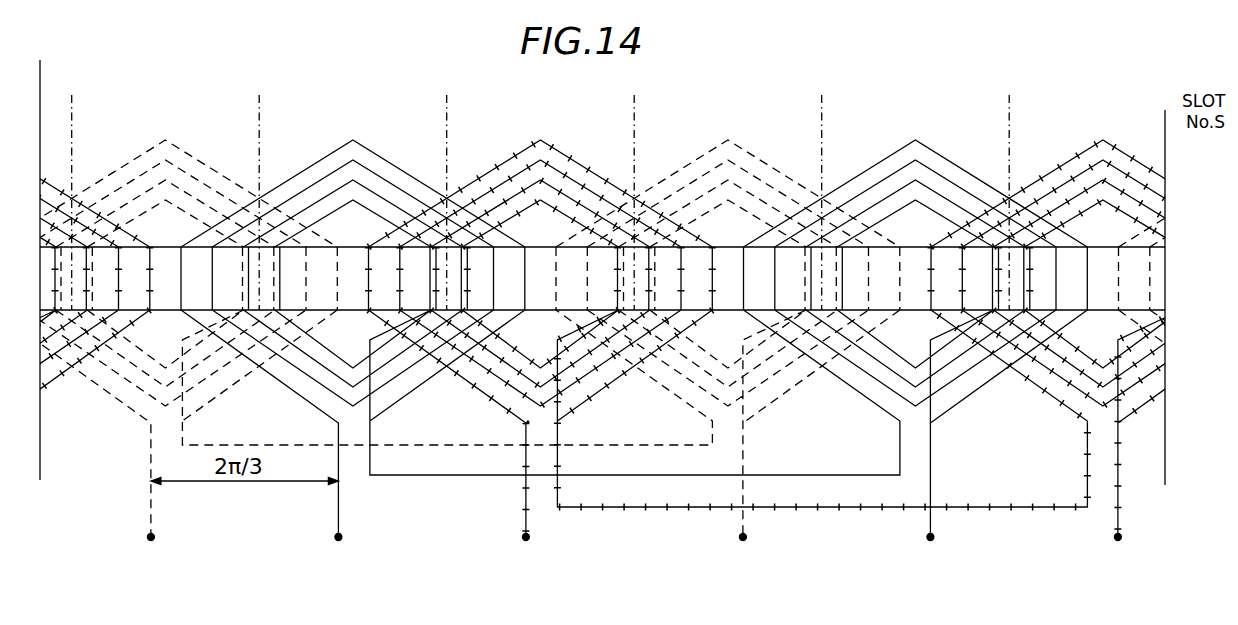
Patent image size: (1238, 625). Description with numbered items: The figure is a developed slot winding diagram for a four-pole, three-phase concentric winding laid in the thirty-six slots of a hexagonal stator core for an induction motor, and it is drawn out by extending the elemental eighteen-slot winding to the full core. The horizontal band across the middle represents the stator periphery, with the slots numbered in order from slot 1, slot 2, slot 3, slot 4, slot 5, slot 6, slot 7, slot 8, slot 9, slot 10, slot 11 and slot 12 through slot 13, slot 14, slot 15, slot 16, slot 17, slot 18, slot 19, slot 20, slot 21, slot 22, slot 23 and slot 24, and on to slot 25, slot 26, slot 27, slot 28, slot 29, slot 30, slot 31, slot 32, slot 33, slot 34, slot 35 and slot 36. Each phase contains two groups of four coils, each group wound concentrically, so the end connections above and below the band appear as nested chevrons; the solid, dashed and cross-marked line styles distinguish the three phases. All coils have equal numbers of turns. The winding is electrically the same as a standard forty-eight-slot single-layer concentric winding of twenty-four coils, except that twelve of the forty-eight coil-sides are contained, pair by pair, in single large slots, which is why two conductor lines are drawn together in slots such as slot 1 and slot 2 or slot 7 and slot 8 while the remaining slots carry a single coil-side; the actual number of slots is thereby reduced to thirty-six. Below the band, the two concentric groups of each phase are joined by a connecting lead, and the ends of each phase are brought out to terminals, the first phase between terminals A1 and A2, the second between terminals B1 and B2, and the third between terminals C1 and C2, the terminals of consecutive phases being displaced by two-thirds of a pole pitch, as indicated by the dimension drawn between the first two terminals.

The slot 1 is at (56, 202).
The slot 2 is at (87, 202).
The slot 3 is at (118, 202).
The slot 4 is at (150, 202).
The slot 5 is at (181, 202).
The slot 6 is at (212, 202).
The slot 7 is at (243, 202).
The slot 8 is at (275, 202).
The slot 9 is at (306, 202).
The slot 10 is at (337, 202).
The slot 11 is at (368, 202).
The slot 12 is at (400, 202).
The slot 13 is at (431, 202).
The slot 14 is at (462, 202).
The slot 15 is at (493, 202).
The slot 16 is at (525, 202).
The slot 17 is at (556, 202).
The slot 18 is at (587, 202).
The slot 19 is at (618, 202).
The slot 20 is at (650, 202).
The slot 21 is at (681, 202).
The slot 22 is at (712, 202).
The slot 23 is at (743, 202).
The slot 24 is at (775, 202).
The slot 25 is at (806, 202).
The slot 26 is at (837, 202).
The slot 27 is at (868, 202).
The slot 28 is at (900, 202).
The slot 29 is at (931, 202).
The slot 30 is at (962, 202).
The slot 31 is at (993, 202).
The slot 32 is at (1025, 202).
The slot 33 is at (1056, 202).
The slot 34 is at (1087, 202).
The slot 35 is at (1118, 202).
The slot 36 is at (1150, 202).
The phase A terminal A1 is at (619, 349).
The phase A terminal A2 is at (755, 543).
The phase B terminal B1 is at (634, 348).
The phase B terminal B2 is at (944, 543).
The phase C terminal C1 is at (619, 348).
The phase C terminal C2 is at (1105, 543).